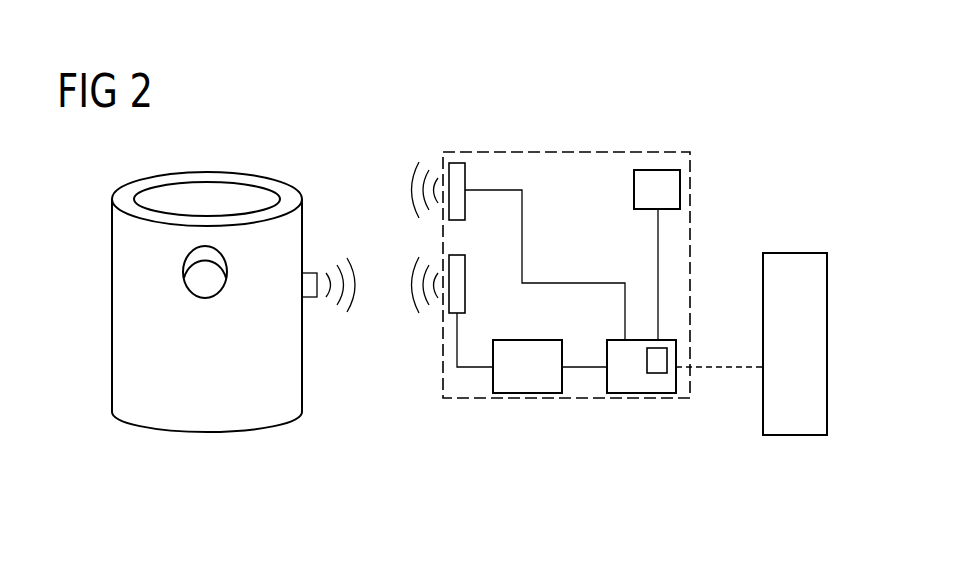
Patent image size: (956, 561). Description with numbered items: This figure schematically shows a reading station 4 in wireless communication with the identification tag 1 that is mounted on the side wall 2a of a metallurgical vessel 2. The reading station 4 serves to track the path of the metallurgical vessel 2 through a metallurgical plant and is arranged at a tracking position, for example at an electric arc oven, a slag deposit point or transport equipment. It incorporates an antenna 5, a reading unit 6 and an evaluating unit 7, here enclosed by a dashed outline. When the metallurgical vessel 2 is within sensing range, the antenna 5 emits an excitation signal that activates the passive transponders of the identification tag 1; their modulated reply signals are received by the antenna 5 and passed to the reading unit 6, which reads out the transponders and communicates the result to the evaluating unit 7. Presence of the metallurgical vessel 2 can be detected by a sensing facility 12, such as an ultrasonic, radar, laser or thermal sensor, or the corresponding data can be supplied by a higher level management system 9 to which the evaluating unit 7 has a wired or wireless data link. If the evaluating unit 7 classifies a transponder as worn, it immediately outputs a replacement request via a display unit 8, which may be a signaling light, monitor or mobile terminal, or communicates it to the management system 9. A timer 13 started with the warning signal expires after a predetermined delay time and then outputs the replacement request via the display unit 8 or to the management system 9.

The identification tag 1 is at (304, 272).
The metallurgical vessel 2 is at (112, 310).
The container wall 2a is at (303, 363).
The reading station 4 is at (690, 243).
The antenna 5 is at (449, 305).
The reading unit 6 is at (530, 394).
The evaluating unit 7 is at (645, 394).
The display unit 8 is at (657, 374).
The higher level management system 9 is at (790, 253).
The sensing facility 12 is at (449, 211).
The timer 13 is at (680, 190).